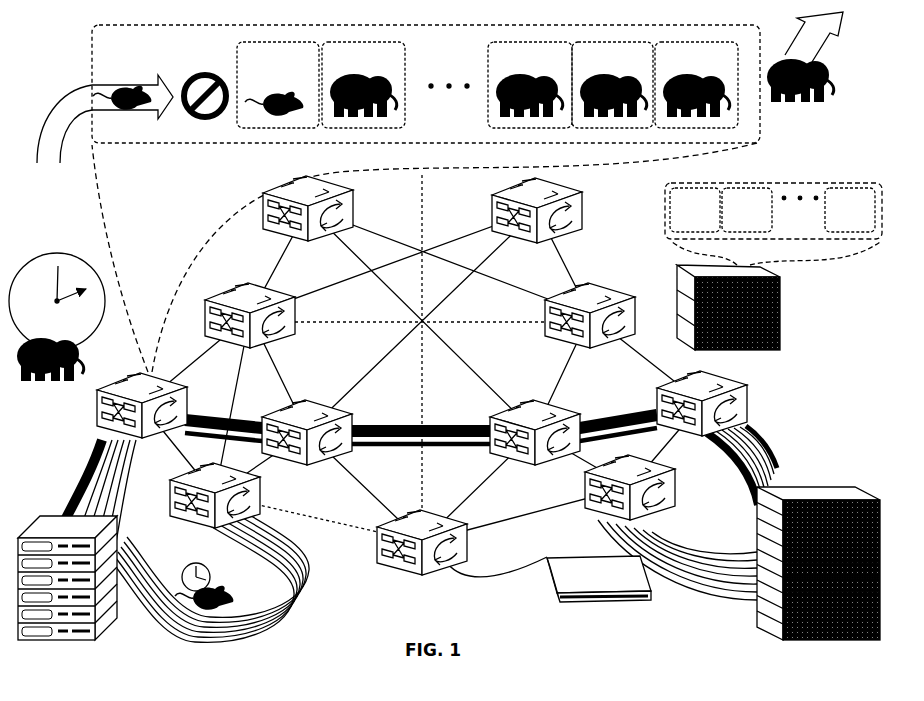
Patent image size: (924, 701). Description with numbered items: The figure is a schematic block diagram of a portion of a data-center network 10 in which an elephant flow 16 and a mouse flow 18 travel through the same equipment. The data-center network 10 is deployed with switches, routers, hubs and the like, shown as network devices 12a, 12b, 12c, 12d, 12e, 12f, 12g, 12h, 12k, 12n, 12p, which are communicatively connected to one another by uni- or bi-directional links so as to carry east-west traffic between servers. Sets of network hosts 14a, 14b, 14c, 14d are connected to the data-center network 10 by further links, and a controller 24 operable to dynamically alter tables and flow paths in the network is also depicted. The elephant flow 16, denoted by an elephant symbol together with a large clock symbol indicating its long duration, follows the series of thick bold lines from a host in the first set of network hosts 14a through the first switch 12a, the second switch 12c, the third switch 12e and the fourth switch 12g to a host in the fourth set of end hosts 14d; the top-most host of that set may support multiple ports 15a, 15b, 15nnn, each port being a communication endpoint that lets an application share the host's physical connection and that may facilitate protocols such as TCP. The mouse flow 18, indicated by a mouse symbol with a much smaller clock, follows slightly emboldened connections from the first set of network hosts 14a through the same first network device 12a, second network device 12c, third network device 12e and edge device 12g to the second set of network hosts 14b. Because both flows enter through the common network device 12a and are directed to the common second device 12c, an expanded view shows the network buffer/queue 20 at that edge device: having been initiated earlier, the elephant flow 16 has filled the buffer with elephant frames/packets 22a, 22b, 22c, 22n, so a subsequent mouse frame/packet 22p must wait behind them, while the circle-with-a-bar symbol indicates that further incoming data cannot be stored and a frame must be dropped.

The data-center network 10 is at (803, 407).
The first switch 12a is at (145, 435).
The network device 12b is at (222, 530).
The second switch 12c is at (352, 452).
The network device 12d is at (380, 565).
The third switch 12e is at (536, 466).
The network device 12f is at (675, 498).
The fourth switch 12g is at (747, 424).
The network device 12h is at (635, 330).
The network device 12k is at (582, 228).
The network device 12n is at (263, 232).
The network device 12p is at (210, 342).
The first set of network hosts 14a is at (110, 625).
The second set of network hosts 14b is at (757, 618).
The set of network hosts 14c is at (599, 597).
The fourth set of end hosts 14d is at (782, 350).
The port 15a is at (695, 210).
The port 15b is at (747, 210).
The port 15nnn is at (850, 210).
The elephant flow 16 is at (82, 462).
The mouse flow 18 is at (183, 567).
The network buffer/queue 20 is at (398, 94).
The elephant frame/packet 22a is at (696, 85).
The elephant frame/packet 22b is at (612, 85).
The elephant frame/packet 22c is at (530, 85).
The elephant frame/packet 22n is at (363, 85).
The mouse frame/packet 22p is at (278, 85).
The controller 24 is at (624, 620).